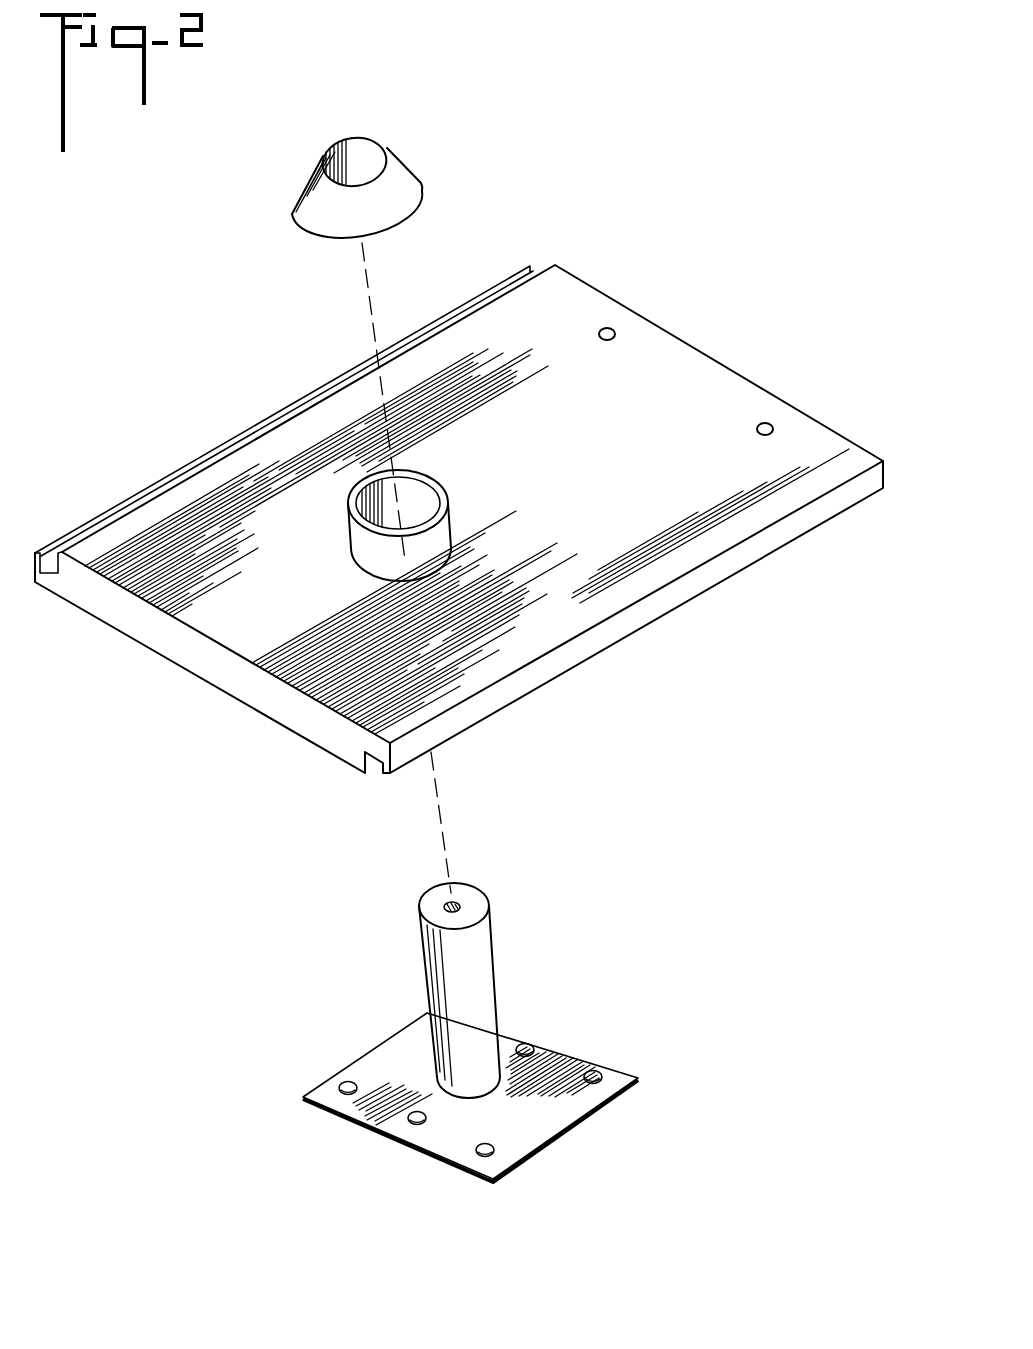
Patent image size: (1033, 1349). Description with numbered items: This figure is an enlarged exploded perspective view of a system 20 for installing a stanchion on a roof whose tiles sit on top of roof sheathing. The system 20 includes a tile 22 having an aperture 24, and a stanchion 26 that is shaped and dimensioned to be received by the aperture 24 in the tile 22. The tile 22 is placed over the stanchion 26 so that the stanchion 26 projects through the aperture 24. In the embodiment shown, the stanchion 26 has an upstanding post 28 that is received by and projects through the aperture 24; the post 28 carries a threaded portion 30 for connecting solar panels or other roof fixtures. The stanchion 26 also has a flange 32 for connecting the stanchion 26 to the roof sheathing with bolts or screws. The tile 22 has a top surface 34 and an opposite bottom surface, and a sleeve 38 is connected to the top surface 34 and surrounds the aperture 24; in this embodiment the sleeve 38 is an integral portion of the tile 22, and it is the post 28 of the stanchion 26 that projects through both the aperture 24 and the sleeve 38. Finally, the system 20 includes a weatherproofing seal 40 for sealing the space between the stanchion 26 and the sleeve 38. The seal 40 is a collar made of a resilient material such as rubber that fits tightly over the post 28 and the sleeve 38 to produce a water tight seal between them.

The system 20 is at (630, 154).
The tile 22 is at (459, 519).
The aperture 24 is at (408, 517).
The stanchion 26 is at (558, 922).
The upstanding post 28 is at (463, 958).
The threaded portion 30 is at (445, 900).
The flange 32 is at (553, 1108).
The top surface 34 is at (563, 474).
The sleeve 38 is at (430, 507).
The weatherproofing seal 40 is at (400, 125).